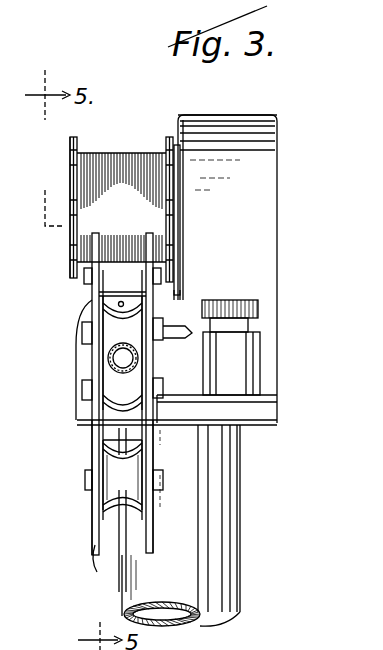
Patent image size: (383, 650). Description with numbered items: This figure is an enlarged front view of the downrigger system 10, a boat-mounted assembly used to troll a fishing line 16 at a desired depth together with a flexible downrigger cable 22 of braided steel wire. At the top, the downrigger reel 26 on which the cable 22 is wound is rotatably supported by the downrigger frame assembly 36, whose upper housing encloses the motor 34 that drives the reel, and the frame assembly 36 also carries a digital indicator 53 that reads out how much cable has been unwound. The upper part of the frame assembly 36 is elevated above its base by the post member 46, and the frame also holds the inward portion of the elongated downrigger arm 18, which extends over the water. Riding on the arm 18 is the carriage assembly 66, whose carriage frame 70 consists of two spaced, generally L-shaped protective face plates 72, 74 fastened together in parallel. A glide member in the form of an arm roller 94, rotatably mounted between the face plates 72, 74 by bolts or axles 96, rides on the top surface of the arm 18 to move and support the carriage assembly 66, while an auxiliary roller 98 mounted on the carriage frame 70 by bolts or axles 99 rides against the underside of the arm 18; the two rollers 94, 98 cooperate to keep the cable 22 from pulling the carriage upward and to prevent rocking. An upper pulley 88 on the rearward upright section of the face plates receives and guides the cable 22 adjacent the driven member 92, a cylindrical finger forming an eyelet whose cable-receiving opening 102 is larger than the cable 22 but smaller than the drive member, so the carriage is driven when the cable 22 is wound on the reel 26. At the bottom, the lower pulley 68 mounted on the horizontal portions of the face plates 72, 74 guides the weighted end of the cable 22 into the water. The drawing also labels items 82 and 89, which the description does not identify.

The downrigger system 10 is at (272, 501).
The fishing line 16 is at (232, 578).
The downrigger arm 18 is at (104, 360).
The downrigger cable 22 is at (127, 574).
The downrigger reel 26 is at (118, 160).
The motor 34 is at (252, 117).
The downrigger frame assembly 36 is at (288, 273).
The post member 46 is at (226, 474).
The digital indicator 53 is at (226, 649).
The carriage assembly 66 is at (80, 448).
The lower pulley 68 is at (112, 498).
The carriage frame 70 is at (78, 247).
The face plate 72 is at (95, 539).
The face plate 74 is at (155, 542).
The bracket 82 is at (96, 547).
The upper pulley 88 is at (108, 283).
The plate 89 is at (170, 275).
The driven member 92 is at (118, 304).
The arm roller 94 is at (110, 327).
The axles 96 is at (170, 325).
The auxiliary roller 98 is at (114, 388).
The axles 99 is at (178, 374).
The cable-receiving opening 102 is at (164, 294).